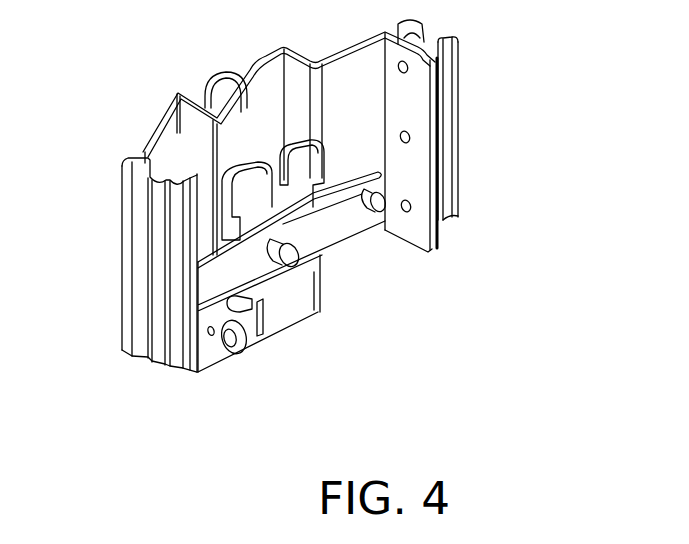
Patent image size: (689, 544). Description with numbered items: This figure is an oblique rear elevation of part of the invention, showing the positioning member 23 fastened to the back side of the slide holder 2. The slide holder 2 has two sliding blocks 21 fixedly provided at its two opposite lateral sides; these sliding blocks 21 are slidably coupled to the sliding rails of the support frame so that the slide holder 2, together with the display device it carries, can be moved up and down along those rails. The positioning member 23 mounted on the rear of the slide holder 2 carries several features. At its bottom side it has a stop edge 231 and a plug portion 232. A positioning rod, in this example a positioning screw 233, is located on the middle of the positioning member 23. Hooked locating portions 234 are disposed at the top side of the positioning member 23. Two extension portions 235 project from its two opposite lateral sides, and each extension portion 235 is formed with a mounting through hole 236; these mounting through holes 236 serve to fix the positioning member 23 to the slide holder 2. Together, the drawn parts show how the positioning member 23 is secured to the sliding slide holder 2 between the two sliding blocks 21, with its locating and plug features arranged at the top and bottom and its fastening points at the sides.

The slide holder 2 is at (232, 107).
The sliding block 21 is at (142, 223).
The positioning member 23 is at (318, 253).
The stop edge 231 is at (247, 325).
The plug portion 232 is at (283, 318).
The positioning screw 233 is at (303, 245).
The hooked locating portion 234 is at (238, 193).
The extension portion 235 is at (212, 283).
The mounting through hole 236 is at (366, 184).